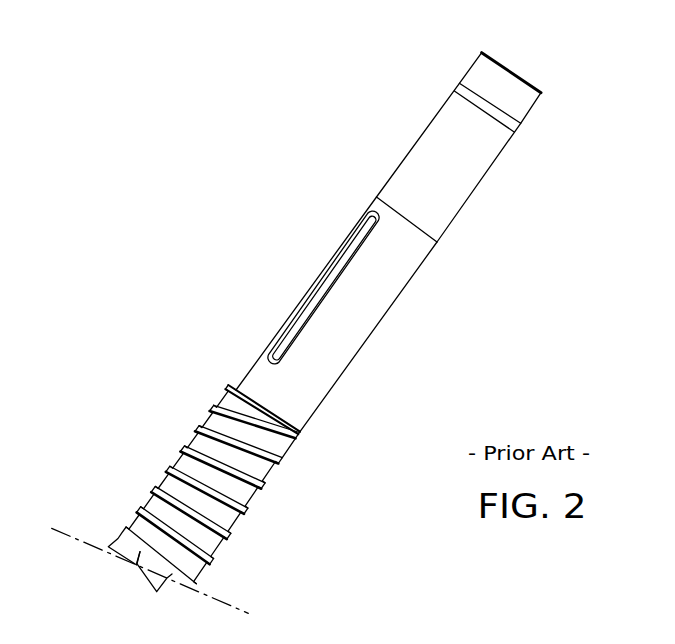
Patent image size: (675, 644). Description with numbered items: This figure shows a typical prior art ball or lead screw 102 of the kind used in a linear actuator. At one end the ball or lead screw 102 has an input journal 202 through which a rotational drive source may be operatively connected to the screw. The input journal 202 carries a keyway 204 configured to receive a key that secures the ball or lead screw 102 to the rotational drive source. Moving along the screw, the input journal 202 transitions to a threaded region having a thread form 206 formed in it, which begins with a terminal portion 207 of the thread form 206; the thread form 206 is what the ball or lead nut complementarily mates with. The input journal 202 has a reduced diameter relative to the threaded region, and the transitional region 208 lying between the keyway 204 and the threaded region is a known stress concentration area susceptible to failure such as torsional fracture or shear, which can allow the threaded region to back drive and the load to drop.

The ball or lead screw 102 is at (493, 92).
The input journal 202 is at (458, 172).
The keyway 204 is at (318, 280).
The thread form 206 is at (172, 477).
The terminal portion 207 is at (288, 454).
The transitional region 208 is at (343, 397).